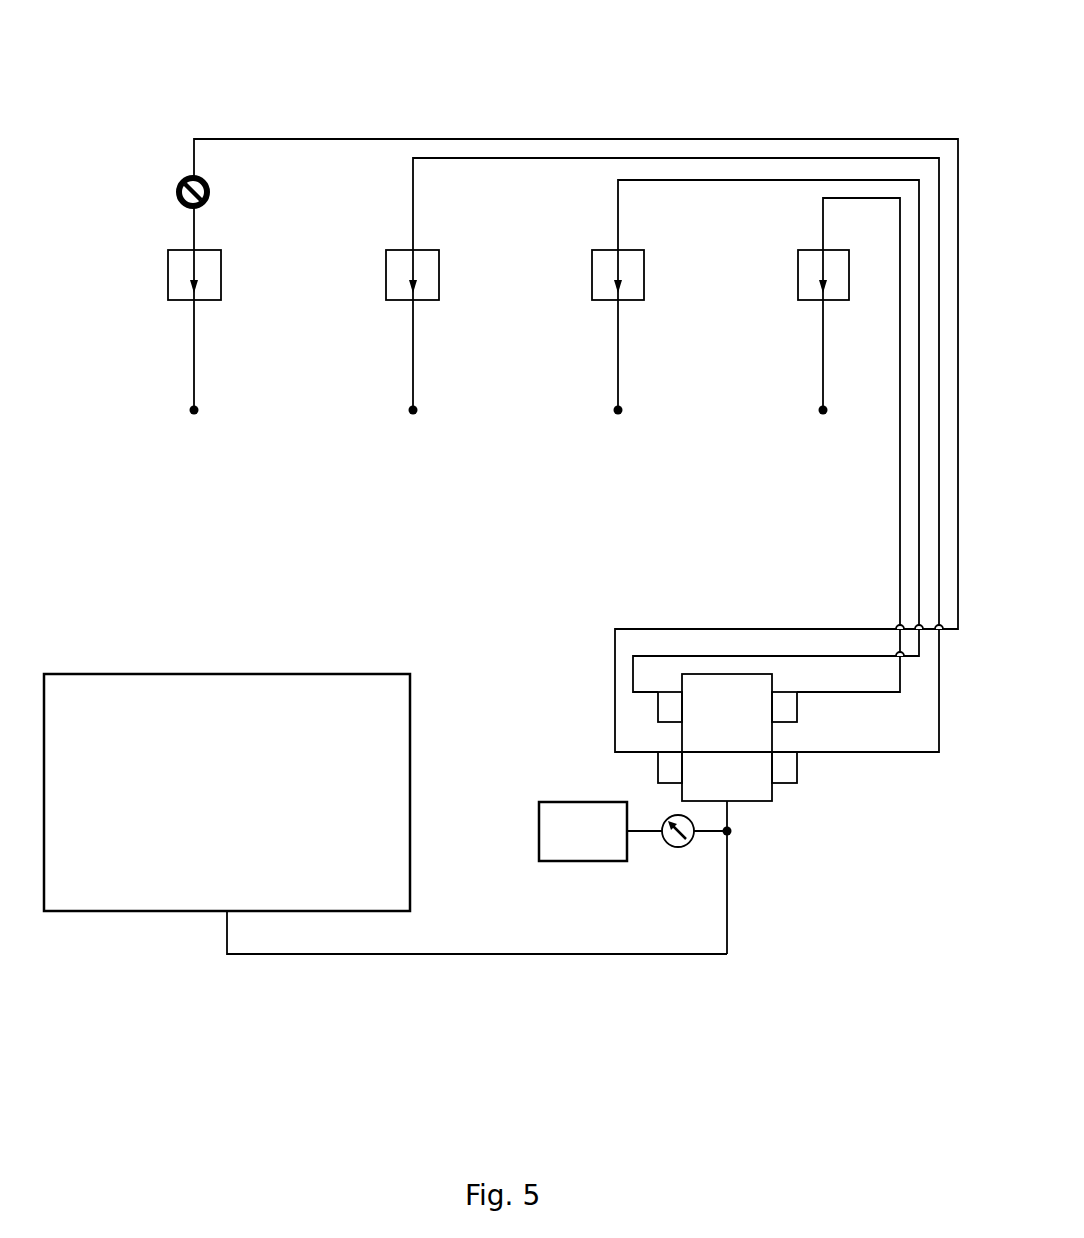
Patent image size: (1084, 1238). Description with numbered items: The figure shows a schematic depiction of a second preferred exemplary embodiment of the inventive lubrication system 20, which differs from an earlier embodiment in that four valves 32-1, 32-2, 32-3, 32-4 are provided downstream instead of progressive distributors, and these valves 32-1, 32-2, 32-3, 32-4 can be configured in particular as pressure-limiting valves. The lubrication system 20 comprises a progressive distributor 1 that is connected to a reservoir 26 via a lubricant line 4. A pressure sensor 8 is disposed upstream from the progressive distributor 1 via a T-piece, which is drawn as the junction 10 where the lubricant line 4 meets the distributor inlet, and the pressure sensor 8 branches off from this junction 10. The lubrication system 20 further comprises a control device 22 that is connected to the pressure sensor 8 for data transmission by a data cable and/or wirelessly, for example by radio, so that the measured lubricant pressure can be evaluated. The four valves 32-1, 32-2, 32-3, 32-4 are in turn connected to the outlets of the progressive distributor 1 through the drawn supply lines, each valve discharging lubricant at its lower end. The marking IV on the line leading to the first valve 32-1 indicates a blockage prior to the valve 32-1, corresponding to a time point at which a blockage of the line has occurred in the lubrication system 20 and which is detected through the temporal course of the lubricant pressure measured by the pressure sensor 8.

The progressive distributor 1 is at (816, 812).
The lubricant line 4 is at (634, 954).
The pressure sensor 8 is at (672, 847).
The junction 10 is at (731, 831).
The lubrication system 20 is at (899, 104).
The control device 22 is at (534, 838).
The reservoir 26 is at (371, 695).
The valve 32-1 is at (168, 249).
The valve 32-2 is at (386, 249).
The valve 32-3 is at (592, 249).
The valve 32-4 is at (798, 249).
The marking IV is at (210, 182).